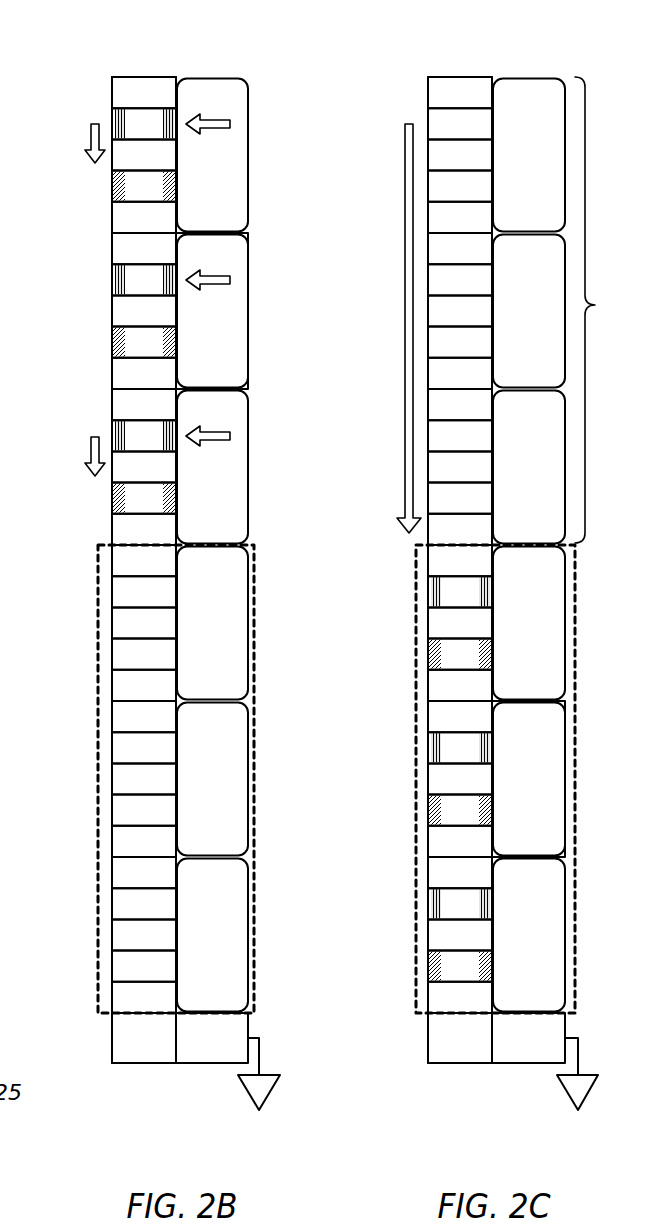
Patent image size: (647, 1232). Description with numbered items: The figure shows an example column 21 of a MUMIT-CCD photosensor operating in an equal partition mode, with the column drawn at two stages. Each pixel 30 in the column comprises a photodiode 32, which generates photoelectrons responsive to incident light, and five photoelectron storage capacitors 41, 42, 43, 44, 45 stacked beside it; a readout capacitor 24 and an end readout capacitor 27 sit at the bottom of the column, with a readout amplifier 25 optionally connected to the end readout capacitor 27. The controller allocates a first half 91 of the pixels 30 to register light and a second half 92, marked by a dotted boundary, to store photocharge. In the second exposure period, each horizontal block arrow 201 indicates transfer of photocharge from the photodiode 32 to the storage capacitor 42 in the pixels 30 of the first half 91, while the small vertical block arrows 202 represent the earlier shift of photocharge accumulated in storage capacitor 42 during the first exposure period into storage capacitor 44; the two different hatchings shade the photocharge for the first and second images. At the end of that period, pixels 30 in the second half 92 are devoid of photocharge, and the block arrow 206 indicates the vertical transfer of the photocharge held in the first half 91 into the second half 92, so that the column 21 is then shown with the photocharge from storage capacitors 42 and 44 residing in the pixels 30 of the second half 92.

In FIG. 2B, the column 21 is at (205, 57).
In FIG. 2C, the column 21 is at (503, 57).
In FIG. 2B, the readout capacitor 24 is at (132, 1053).
In FIG. 2C, the readout capacitor 24 is at (448, 1053).
In FIG. 2B, the readout amplifier 25 is at (282, 1096).
In FIG. 2C, the readout amplifier 25 is at (568, 1106).
In FIG. 2B, the end readout capacitor 27 is at (201, 1053).
In FIG. 2C, the end readout capacitor 27 is at (517, 1053).
In FIG. 2B, the pixel 30 is at (68, 322).
In FIG. 2C, the pixel 30 is at (496, 779).
In FIG. 2B, the photodiode 32 is at (203, 218).
In FIG. 2C, the photodiode 32 is at (519, 218).
In FIG. 2B, the storage capacitor 41 is at (144, 482).
In FIG. 2C, the storage capacitor 41 is at (460, 482).
In FIG. 2B, the storage capacitor 42 is at (144, 513).
In FIG. 2C, the storage capacitor 42 is at (460, 513).
In FIG. 2B, the storage capacitor 43 is at (144, 544).
In FIG. 2C, the storage capacitor 43 is at (460, 544).
In FIG. 2B, the storage capacitor 44 is at (144, 576).
In FIG. 2C, the storage capacitor 44 is at (460, 576).
In FIG. 2B, the storage capacitor 45 is at (144, 607).
In FIG. 2C, the storage capacitor 45 is at (460, 607).
In FIG. 2C, the first half of pixels 91 is at (597, 310).
In FIG. 2B, the second half of pixels 92 is at (253, 668).
In FIG. 2C, the second half of pixels 92 is at (495, 779).
In FIG. 2B, the horizontal block arrow 201 is at (232, 277).
In FIG. 2B, the vertical block arrow 202 is at (85, 140).
In FIG. 2C, the block arrow 206 is at (405, 194).